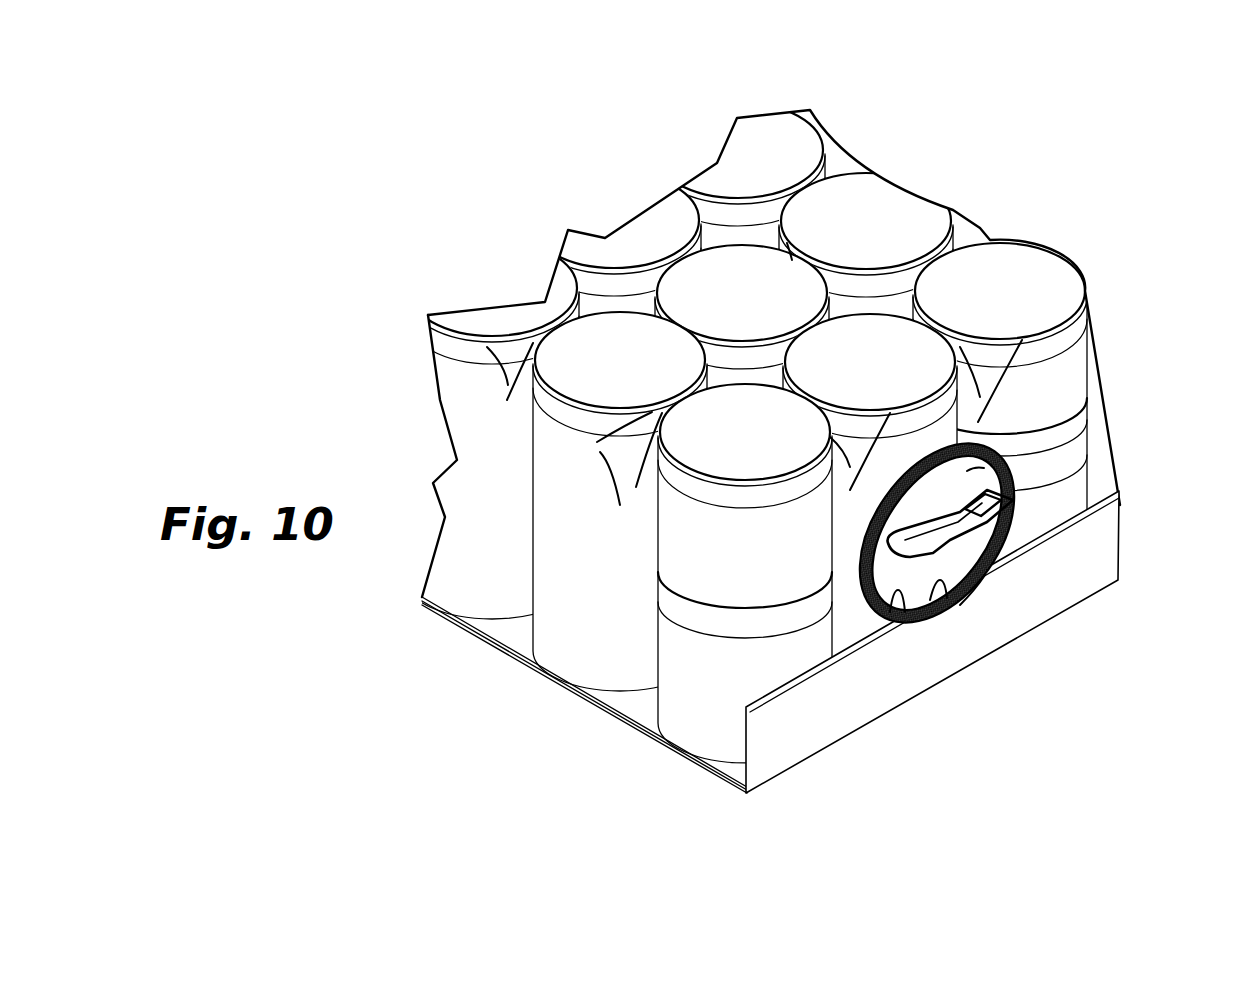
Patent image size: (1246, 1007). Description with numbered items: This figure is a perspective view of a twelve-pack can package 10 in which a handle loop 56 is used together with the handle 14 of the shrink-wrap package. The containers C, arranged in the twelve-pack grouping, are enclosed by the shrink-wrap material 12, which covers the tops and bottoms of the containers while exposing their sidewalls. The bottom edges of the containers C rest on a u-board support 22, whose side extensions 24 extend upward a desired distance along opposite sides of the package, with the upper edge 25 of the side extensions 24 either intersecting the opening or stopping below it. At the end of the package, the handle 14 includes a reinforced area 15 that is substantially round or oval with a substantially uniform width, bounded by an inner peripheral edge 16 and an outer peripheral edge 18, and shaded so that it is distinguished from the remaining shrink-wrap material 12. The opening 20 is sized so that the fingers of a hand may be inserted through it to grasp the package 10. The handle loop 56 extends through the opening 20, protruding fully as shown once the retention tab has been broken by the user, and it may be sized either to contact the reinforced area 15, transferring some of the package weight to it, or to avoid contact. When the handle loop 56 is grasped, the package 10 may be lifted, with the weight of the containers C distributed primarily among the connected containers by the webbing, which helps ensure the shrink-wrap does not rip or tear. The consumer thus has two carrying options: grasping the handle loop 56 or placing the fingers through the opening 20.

The package 10 is at (818, 456).
The shrink-wrap material 12 is at (982, 228).
The handle 14 is at (1030, 398).
The reinforced area 15 is at (1007, 442).
The inner peripheral edge 16 is at (903, 596).
The outer peripheral edge 18 is at (935, 622).
The opening 20 is at (947, 565).
The u-board support 22 is at (510, 633).
The side extension 24 is at (797, 717).
The upper edge 25 is at (973, 597).
The handle loop 56 is at (1020, 495).
The container C is at (915, 208).